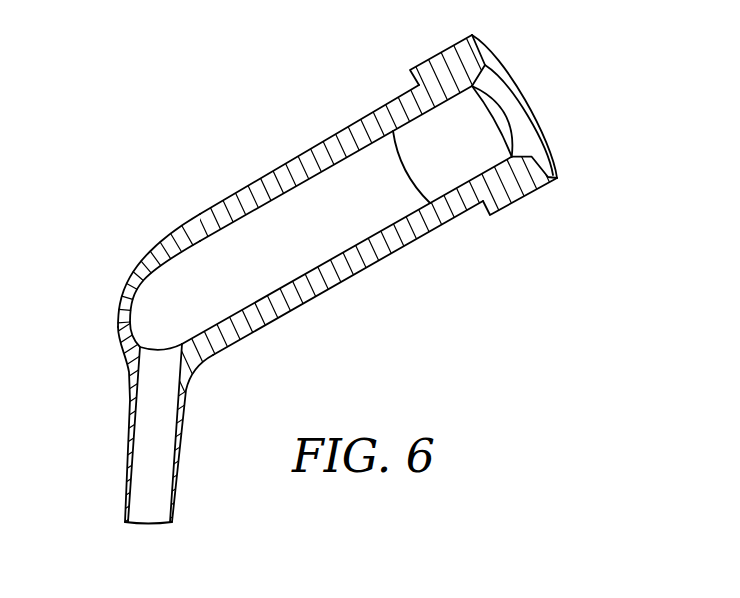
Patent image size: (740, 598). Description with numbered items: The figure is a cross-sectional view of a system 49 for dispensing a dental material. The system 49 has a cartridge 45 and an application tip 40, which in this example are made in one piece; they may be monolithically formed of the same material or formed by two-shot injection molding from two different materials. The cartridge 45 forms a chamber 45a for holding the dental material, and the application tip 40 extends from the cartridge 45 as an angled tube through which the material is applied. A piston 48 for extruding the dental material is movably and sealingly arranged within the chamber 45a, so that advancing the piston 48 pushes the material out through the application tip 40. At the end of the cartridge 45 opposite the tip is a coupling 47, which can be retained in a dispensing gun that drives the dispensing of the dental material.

The application tip 40 is at (121, 437).
The cartridge 45 is at (333, 150).
The chamber 45a is at (242, 240).
The coupling 47 is at (532, 197).
The piston 48 is at (475, 132).
The system for dispensing a dental material 49 is at (371, 299).